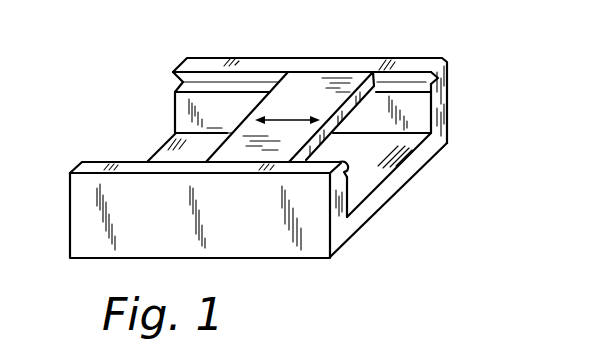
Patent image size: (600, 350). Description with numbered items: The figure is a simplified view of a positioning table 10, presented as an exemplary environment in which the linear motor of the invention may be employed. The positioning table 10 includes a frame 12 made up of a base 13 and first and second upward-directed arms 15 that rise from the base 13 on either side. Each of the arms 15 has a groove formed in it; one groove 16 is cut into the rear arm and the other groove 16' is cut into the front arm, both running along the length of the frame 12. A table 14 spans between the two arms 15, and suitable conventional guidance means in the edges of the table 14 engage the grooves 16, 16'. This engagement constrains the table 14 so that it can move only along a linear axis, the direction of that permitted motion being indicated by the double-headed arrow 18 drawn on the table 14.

The positioning table 10 is at (400, 47).
The frame 12 is at (335, 197).
The base 13 is at (397, 186).
The table 14 is at (307, 80).
The upward-directed arms 15 is at (440, 126).
The groove 16 is at (464, 91).
The groove 16' is at (391, 197).
The double-headed arrow 18 is at (283, 119).